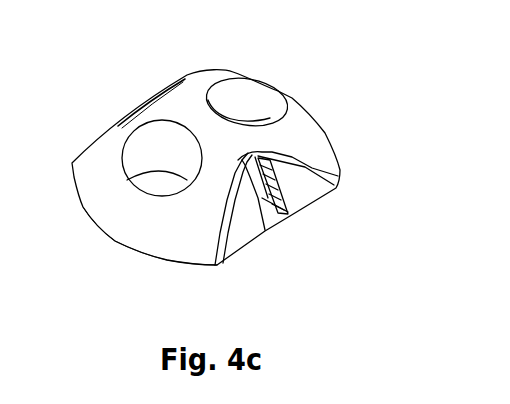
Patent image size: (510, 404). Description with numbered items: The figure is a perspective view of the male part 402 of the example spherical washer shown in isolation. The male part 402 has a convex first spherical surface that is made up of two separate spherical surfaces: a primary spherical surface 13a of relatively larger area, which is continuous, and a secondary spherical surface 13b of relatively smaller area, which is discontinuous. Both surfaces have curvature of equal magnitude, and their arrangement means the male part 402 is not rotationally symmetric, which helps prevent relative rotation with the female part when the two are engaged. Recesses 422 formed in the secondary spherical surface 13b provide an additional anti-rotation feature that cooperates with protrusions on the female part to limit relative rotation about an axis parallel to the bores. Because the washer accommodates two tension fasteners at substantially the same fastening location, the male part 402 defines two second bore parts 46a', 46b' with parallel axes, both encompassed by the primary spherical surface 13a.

The male part 402 is at (330, 107).
The primary spherical surface 13a is at (185, 225).
The secondary spherical surface 13b is at (117, 122).
The recesses 422 is at (163, 93).
The second bore part 46a' is at (293, 88).
The second bore part 46b' is at (103, 176).